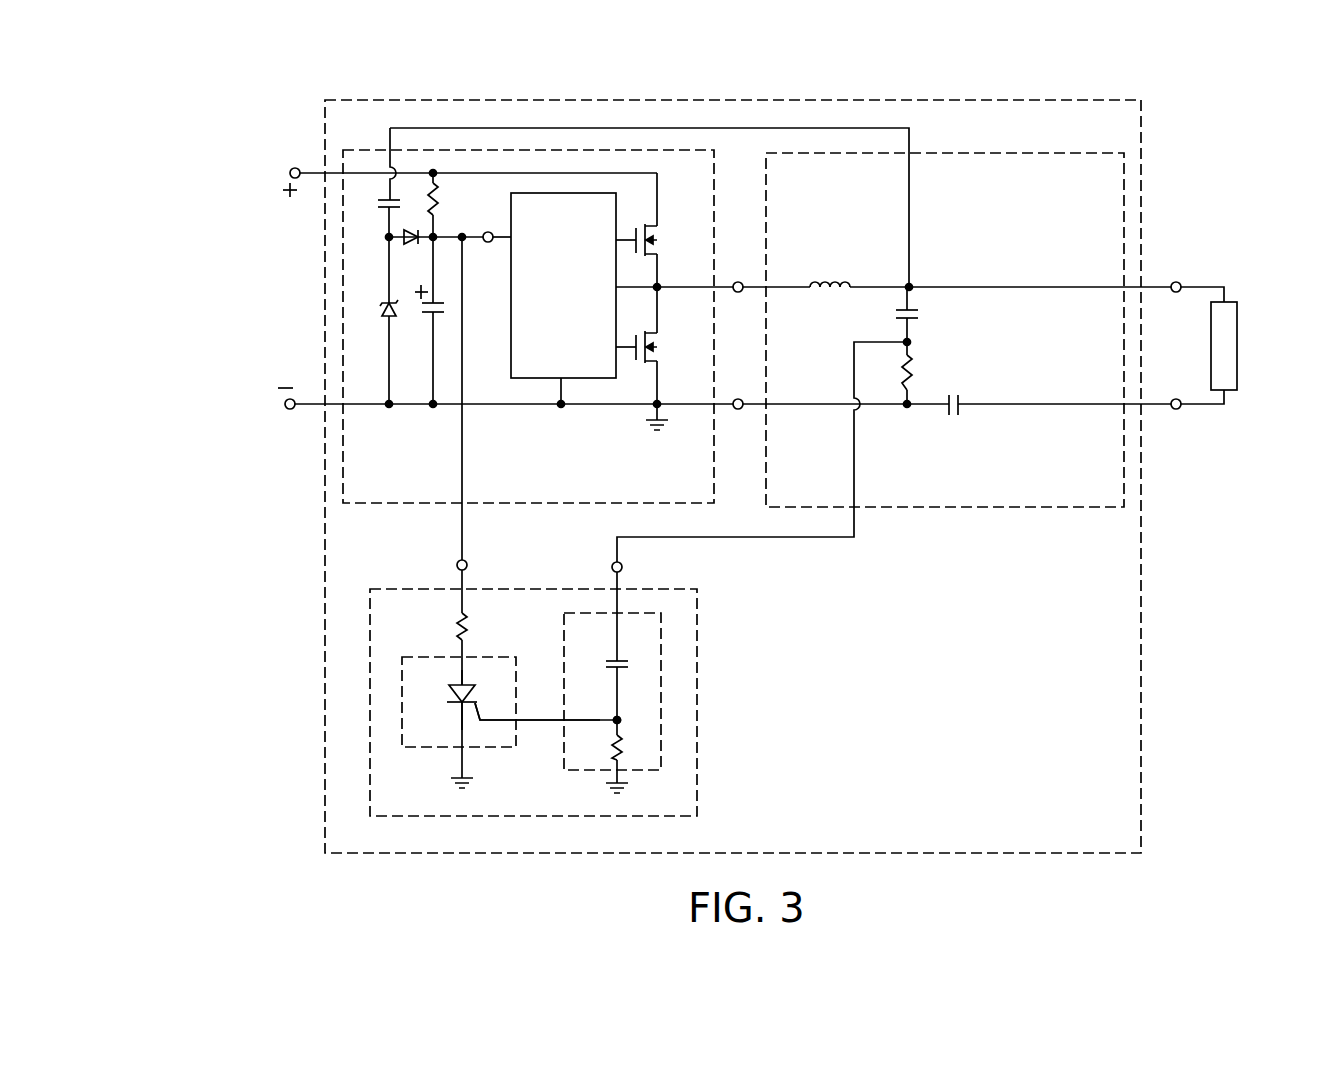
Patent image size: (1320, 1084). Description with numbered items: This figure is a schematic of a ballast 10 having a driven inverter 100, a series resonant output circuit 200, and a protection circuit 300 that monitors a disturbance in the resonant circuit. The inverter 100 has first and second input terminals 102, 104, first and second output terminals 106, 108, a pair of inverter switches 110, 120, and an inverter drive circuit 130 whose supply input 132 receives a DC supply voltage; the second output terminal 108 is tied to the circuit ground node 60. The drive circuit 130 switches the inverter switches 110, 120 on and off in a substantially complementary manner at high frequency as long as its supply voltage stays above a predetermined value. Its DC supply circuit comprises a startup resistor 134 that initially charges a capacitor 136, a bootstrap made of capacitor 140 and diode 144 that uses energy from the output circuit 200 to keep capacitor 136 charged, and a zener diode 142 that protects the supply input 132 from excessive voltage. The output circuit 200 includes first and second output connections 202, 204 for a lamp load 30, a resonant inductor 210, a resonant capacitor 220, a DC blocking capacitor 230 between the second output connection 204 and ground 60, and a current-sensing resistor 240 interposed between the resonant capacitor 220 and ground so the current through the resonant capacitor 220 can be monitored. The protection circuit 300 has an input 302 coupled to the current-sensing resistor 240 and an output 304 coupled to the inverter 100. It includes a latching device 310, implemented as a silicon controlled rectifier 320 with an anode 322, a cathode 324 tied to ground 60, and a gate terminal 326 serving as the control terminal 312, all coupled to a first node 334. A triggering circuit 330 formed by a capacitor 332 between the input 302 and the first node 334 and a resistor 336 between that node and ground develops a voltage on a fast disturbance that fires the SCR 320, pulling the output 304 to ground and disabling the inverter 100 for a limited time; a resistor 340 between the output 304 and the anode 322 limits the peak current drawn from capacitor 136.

The ballast 10 is at (1030, 787).
The lamp load 30 is at (1230, 345).
The circuit ground node 60 is at (660, 409).
The inverter 100 is at (574, 468).
The first input terminal 102 is at (291, 170).
The second input terminal 104 is at (285, 409).
The first output terminal 106 is at (738, 282).
The second output terminal 108 is at (738, 410).
The inverter switch 110 is at (653, 243).
The inverter switch 120 is at (653, 350).
The inverter drive circuit 130 is at (542, 352).
The supply input 132 is at (486, 233).
The resistor 134 is at (437, 207).
The capacitor 136 is at (427, 314).
The capacitor 140 is at (380, 205).
The zener diode 142 is at (380, 309).
The diode 144 is at (405, 245).
The output circuit 200 is at (975, 475).
The first output connection 202 is at (1176, 282).
The second output connection 204 is at (1176, 409).
The resonant inductor 210 is at (828, 285).
The resonant capacitor 220 is at (918, 306).
The DC blocking capacitor 230 is at (959, 397).
The current-sensing resistor 240 is at (912, 372).
The protection circuit 300 is at (547, 800).
The input 302 is at (623, 566).
The output 304 is at (457, 565).
The latching device 310 is at (485, 657).
The control terminal 312 is at (533, 722).
The silicon controlled rectifier 320 is at (457, 692).
The anode 322 is at (458, 684).
The cathode 324 is at (458, 724).
The gate terminal 326 is at (493, 720).
The triggering circuit 330 is at (614, 643).
The capacitor 332 is at (615, 660).
The first node 334 is at (617, 720).
The resistor 336 is at (620, 757).
The resistor 340 is at (462, 624).